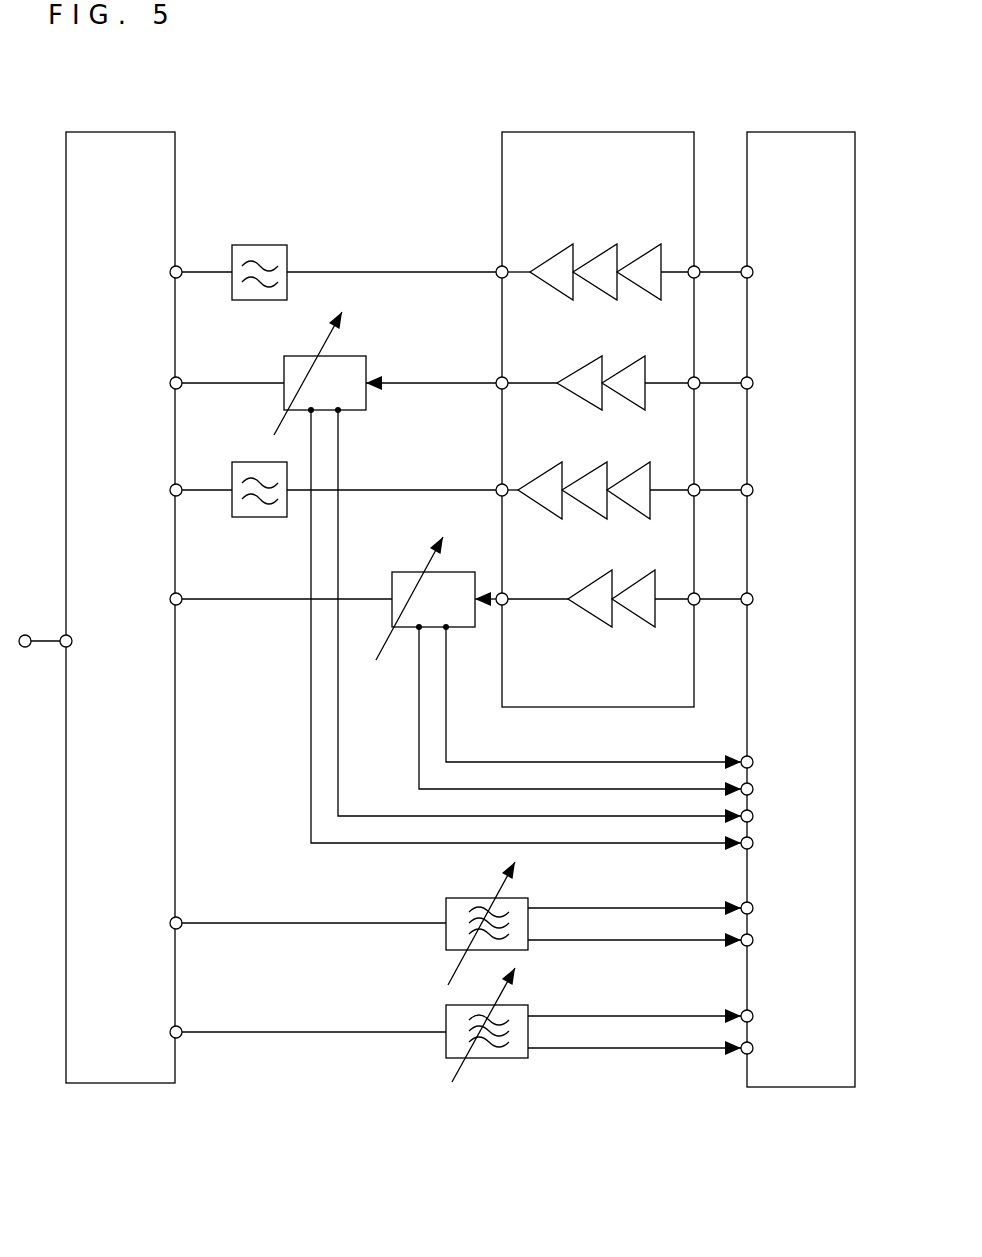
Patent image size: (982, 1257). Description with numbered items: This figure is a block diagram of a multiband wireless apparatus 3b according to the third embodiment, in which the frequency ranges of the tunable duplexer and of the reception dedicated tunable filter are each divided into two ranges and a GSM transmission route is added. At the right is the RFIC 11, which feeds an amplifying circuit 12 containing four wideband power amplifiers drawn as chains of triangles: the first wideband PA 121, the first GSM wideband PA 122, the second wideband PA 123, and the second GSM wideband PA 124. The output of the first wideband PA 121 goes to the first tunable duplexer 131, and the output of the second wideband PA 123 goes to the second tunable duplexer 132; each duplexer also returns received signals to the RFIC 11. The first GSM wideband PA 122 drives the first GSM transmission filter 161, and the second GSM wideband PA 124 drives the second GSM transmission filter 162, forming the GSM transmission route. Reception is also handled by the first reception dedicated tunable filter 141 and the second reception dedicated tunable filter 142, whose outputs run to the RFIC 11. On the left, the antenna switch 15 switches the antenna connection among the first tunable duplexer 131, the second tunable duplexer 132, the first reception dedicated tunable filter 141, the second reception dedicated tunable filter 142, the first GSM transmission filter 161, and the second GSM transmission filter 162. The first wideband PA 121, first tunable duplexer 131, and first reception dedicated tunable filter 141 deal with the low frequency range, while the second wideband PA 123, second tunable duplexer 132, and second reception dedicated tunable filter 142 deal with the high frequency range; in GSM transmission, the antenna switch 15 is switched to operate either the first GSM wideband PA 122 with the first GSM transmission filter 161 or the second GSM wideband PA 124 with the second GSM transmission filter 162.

The multiband wireless apparatus 3b is at (815, 118).
The RFIC 11 is at (822, 1089).
The amplifying circuit 12 is at (612, 131).
The antenna switch 15 is at (130, 1086).
The first wideband PA 121 is at (588, 585).
The first GSM wideband PA 122 is at (585, 472).
The second wideband PA 123 is at (578, 367).
The second GSM wideband PA 124 is at (595, 255).
The first tunable duplexer 131 is at (460, 572).
The second tunable duplexer 132 is at (350, 355).
The first reception dedicated tunable filter 141 is at (522, 898).
The second reception dedicated tunable filter 142 is at (522, 1008).
The first GSM transmission filter 161 is at (252, 520).
The second GSM transmission filter 162 is at (252, 302).